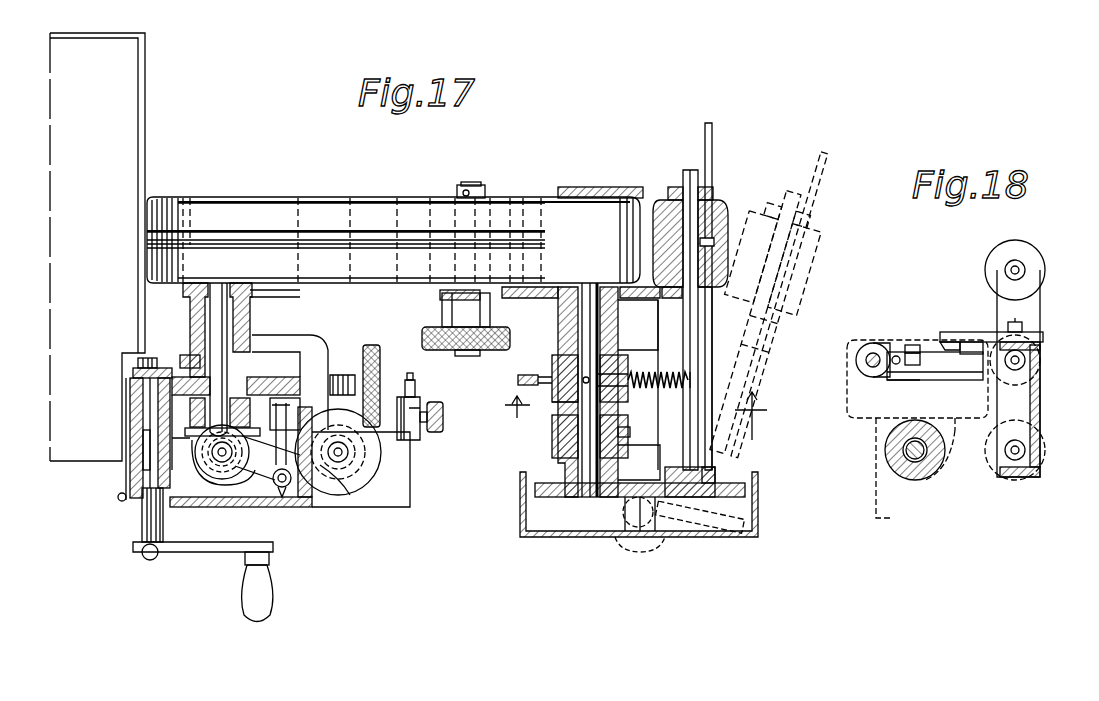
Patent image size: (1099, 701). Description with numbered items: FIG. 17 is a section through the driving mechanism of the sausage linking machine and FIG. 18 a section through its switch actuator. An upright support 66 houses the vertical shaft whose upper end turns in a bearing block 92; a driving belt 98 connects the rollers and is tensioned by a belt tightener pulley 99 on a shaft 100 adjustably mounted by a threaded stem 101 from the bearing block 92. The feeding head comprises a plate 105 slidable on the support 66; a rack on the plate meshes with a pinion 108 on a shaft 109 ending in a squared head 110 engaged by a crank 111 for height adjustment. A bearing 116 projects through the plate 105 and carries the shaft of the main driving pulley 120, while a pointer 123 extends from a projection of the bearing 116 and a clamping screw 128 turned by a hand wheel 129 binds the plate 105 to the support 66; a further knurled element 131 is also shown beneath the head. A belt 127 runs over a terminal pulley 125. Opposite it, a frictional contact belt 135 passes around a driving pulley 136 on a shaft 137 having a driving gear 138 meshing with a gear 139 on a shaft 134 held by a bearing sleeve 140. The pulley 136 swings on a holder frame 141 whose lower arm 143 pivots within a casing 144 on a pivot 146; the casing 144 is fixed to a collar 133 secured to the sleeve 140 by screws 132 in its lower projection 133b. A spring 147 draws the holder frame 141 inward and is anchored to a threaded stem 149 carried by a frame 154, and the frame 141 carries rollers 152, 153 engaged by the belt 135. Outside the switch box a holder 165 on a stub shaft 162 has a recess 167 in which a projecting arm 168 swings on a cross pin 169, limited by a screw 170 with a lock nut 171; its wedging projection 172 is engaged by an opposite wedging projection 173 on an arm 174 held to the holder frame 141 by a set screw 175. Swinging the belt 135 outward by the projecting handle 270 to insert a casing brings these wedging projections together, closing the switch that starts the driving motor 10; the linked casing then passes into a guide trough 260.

In FIG. 17, the guide trough 260 is at (145, 117).
In FIG. 17, the main driving pulley 120 is at (298, 218).
In FIG. 17, the belt 127 is at (367, 205).
In FIG. 17, the terminal pulley 125 is at (566, 288).
In FIG. 17, the shaft 134 is at (567, 338).
In FIG. 18, the shaft 134 is at (915, 462).
In FIG. 17, the bearing sleeve 140 is at (604, 327).
In FIG. 18, the bearing sleeve 140 is at (888, 462).
In FIG. 17, the spring 147 is at (655, 374).
In FIG. 17, the threaded stem 149 is at (518, 380).
In FIG. 17, the frame 154 is at (553, 400).
In FIG. 18, the frame 154 is at (948, 478).
In FIG. 17, the collar 133 is at (552, 455).
In FIG. 17, the driving motor 10 is at (634, 416).
In FIG. 17, the knurled knob 131 is at (485, 352).
In FIG. 17, the clamping screw 128 is at (336, 375).
In FIG. 17, the hand wheel 129 is at (372, 345).
In FIG. 17, the bearing 116 is at (252, 308).
In FIG. 17, the pointer 123 is at (322, 352).
In FIG. 17, the upright support 66 is at (418, 447).
In FIG. 17, the plate 105 is at (174, 367).
In FIG. 17, the pinion 108 is at (140, 383).
In FIG. 17, the shaft 109 is at (150, 455).
In FIG. 17, the squared head 110 is at (142, 518).
In FIG. 17, the crank 111 is at (200, 551).
In FIG. 17, the shaft 100 is at (300, 505).
In FIG. 17, the driving belt 98 is at (350, 490).
In FIG. 17, the bearing block 92 is at (357, 452).
In FIG. 17, the threaded stem 101 is at (282, 490).
In FIG. 17, the belt tightener pulley 99 is at (272, 488).
In FIG. 17, the shaft 137 is at (689, 180).
In FIG. 17, the projecting handle 270 is at (713, 130).
In FIG. 17, the driving pulley 136 is at (718, 200).
In FIG. 18, the driving pulley 136 is at (1043, 470).
In FIG. 17, the frictional contact belt 135 is at (728, 225).
In FIG. 17, the holder frame 141 is at (707, 347).
In FIG. 18, the holder frame 141 is at (1035, 405).
In FIG. 17, the casing 144 is at (522, 510).
In FIG. 17, the gear 139 is at (560, 497).
In FIG. 17, the driving gear 138 is at (725, 480).
In FIG. 17, the lower projection 133b is at (635, 470).
In FIG. 17, the screws 132 is at (647, 540).
In FIG. 17, the pivot 146 is at (682, 530).
In FIG. 18, the roller 153 is at (1058, 248).
In FIG. 18, the roller 152 is at (1038, 375).
In FIG. 18, the lower arm 143 is at (1040, 334).
In FIG. 18, the set screw 175 is at (1017, 328).
In FIG. 18, the arm 174 is at (990, 330).
In FIG. 18, the wedging projection 173 is at (948, 342).
In FIG. 18, the lock nut 171 is at (915, 345).
In FIG. 18, the cross pin 169 is at (896, 355).
In FIG. 18, the screw 170 is at (912, 352).
In FIG. 18, the holder 165 is at (866, 345).
In FIG. 18, the stub shaft 162 is at (868, 364).
In FIG. 18, the projecting arm 168 is at (942, 372).
In FIG. 18, the recess 167 is at (890, 380).
In FIG. 18, the wedging projection 172 is at (978, 356).